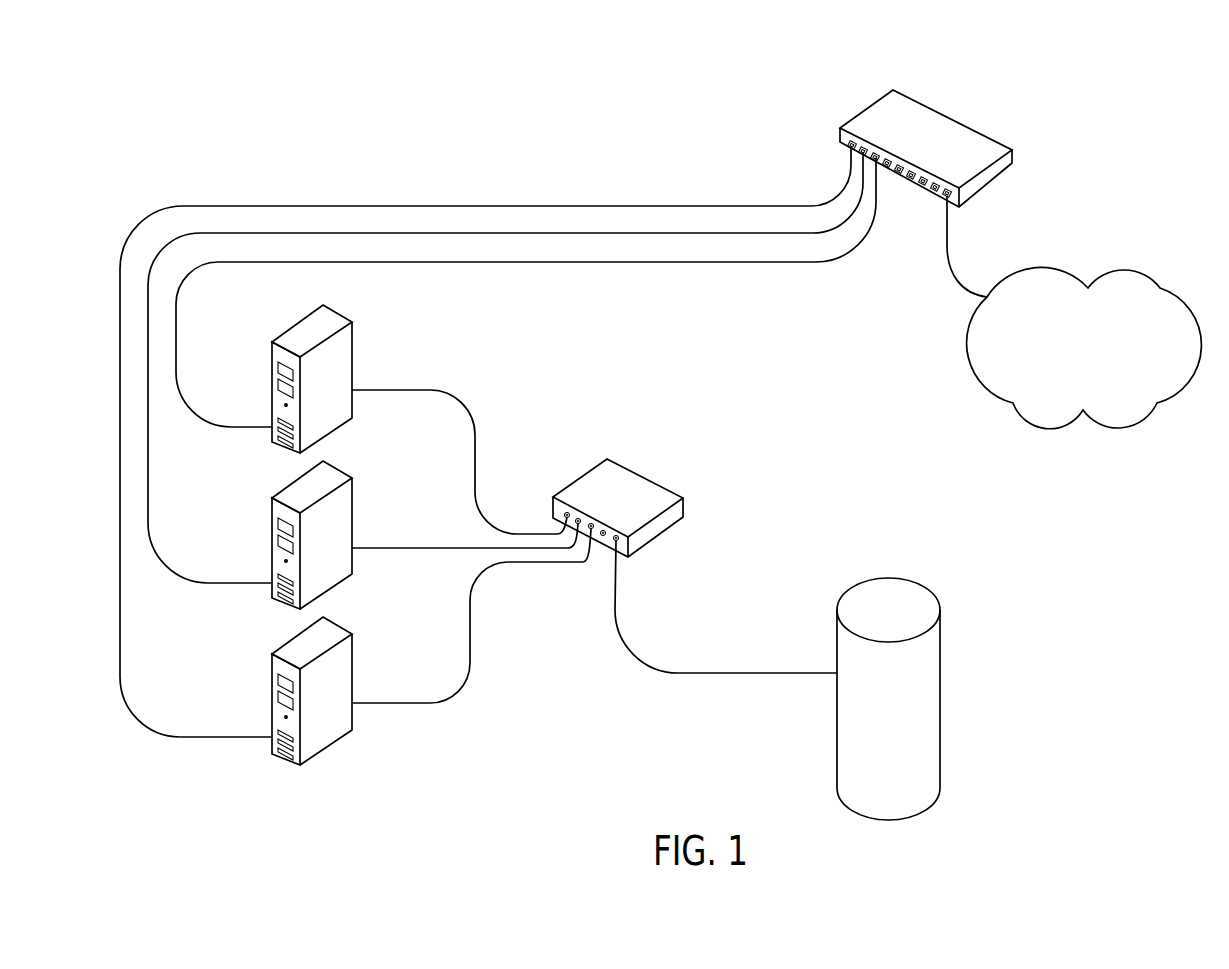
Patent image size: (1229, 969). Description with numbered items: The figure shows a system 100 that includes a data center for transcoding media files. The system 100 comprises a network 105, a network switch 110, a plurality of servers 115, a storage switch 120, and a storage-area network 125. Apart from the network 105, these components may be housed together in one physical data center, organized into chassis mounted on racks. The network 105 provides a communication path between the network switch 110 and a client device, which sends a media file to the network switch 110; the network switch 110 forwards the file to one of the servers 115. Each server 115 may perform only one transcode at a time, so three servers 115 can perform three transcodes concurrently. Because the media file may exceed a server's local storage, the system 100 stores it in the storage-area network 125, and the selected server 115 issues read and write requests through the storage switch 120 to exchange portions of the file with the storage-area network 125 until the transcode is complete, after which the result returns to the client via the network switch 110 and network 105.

The system 100 is at (328, 126).
The network 105 is at (1135, 270).
The network switch 110 is at (942, 112).
The servers 115 is at (352, 340).
The storage switch 120 is at (635, 470).
The storage-area network (SAN) 125 is at (940, 655).